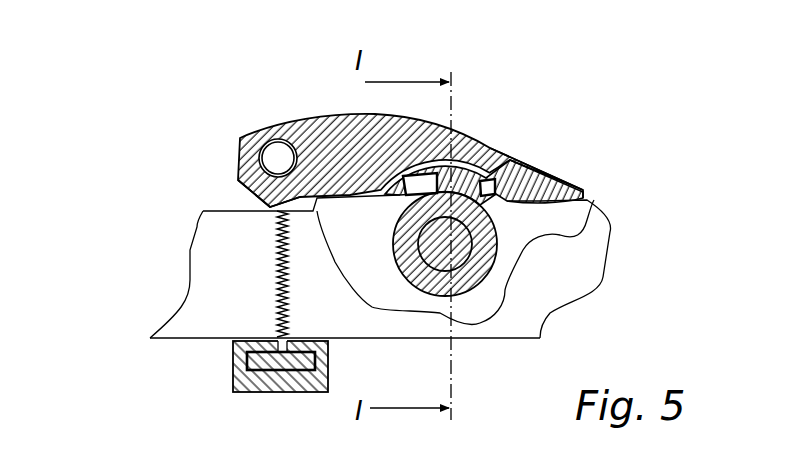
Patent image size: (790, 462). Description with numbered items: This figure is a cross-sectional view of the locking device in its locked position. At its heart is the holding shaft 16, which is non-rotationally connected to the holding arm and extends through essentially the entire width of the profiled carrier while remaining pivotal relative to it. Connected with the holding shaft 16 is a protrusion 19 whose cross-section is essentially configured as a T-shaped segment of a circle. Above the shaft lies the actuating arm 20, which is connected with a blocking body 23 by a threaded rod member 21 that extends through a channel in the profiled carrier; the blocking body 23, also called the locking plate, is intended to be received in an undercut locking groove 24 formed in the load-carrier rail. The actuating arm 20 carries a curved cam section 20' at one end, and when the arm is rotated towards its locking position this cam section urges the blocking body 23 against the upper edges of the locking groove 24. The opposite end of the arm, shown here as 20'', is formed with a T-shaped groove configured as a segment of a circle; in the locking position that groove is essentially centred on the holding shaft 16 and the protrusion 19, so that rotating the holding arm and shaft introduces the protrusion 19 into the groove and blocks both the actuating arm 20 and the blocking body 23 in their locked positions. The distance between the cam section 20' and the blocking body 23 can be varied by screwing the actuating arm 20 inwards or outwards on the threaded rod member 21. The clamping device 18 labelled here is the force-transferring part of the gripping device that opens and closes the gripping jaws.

The holding shaft 16 is at (447, 246).
The clamping device 18 is at (234, 242).
The protrusion 19 is at (527, 176).
The actuating arm 20 is at (398, 112).
The curved cam section 20' is at (203, 182).
The second end of rocker arm 20'' is at (530, 139).
The threaded rod member 21 is at (277, 280).
The blocking body 23 is at (235, 353).
The locking groove 24 is at (258, 392).